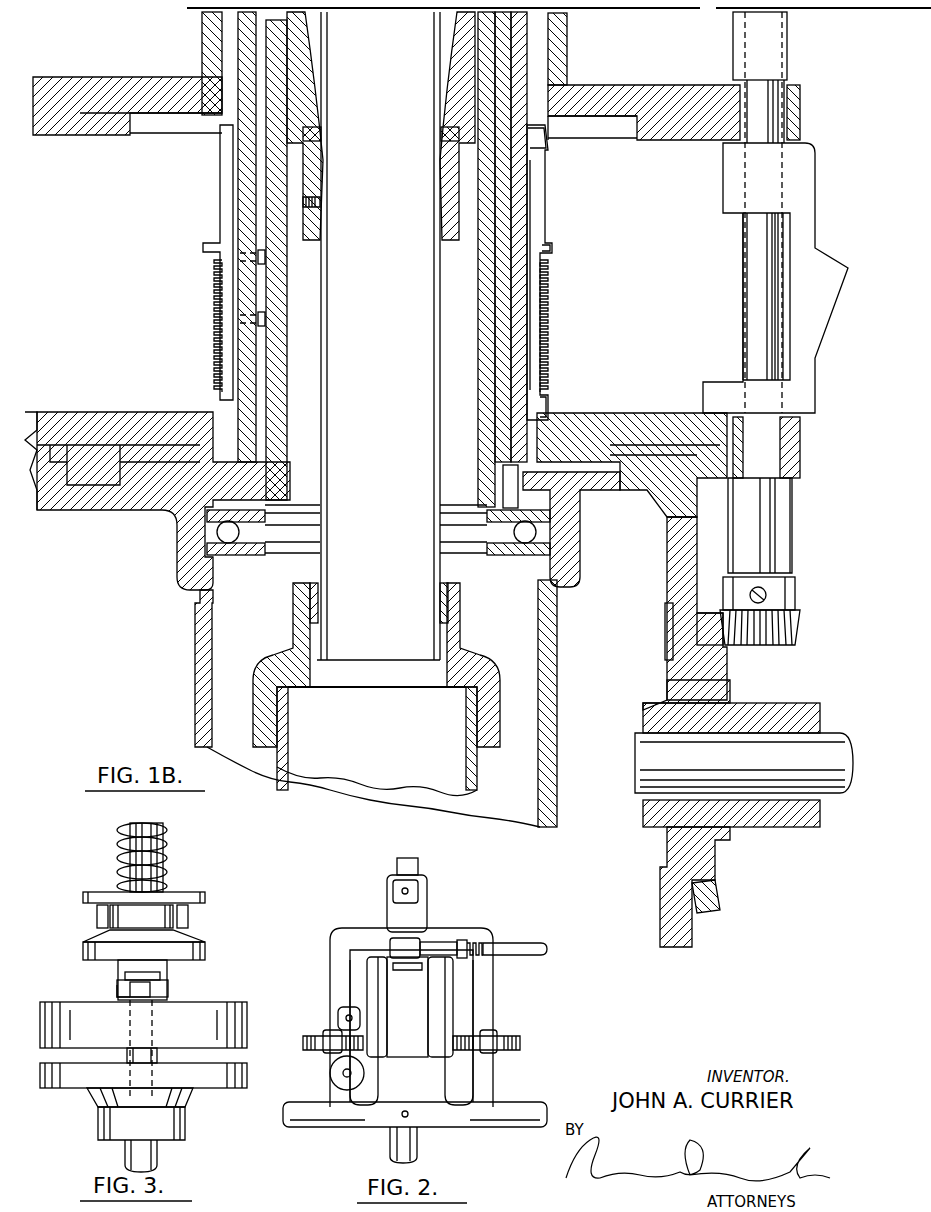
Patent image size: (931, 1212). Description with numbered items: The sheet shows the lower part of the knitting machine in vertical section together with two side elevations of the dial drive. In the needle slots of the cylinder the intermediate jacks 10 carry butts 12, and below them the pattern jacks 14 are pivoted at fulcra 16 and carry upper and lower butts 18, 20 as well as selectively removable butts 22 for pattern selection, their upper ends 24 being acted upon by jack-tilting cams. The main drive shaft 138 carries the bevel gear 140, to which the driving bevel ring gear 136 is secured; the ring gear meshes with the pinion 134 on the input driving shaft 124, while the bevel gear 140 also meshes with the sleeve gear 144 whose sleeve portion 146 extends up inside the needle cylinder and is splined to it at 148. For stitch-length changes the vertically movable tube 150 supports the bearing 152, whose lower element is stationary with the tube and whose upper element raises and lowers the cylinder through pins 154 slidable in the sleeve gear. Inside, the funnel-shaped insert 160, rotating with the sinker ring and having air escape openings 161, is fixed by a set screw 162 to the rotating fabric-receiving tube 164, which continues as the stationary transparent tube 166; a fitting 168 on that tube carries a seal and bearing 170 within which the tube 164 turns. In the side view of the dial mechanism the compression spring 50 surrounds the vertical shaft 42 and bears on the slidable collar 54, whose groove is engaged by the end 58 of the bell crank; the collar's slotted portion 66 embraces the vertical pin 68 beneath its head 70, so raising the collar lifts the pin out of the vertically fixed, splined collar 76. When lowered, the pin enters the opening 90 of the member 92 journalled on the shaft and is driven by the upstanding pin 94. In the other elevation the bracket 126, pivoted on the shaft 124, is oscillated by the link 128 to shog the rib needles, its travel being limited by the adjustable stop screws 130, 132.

In FIG. 1B, the intermediate jacks 10 is at (548, 58).
In FIG. 1B, the butts 12 is at (558, 115).
In FIG. 1B, the pattern jacks 14 is at (540, 228).
In FIG. 1B, the fulcra 16 is at (527, 210).
In FIG. 1B, the upper butt 18 is at (552, 248).
In FIG. 1B, the lower butt 20 is at (548, 405).
In FIG. 1B, the selectively removable butts 22 is at (548, 310).
In FIG. 1B, the upper ends of the pattern jacks 24 is at (545, 160).
In FIG. 1B, the shaft 124 is at (775, 120).
In FIG. 2, the shaft 124 is at (420, 1150).
In FIG. 1B, the pinion 134 is at (796, 625).
In FIG. 1B, the bevel ring gear 136 is at (717, 898).
In FIG. 1B, the main drive shaft 138 is at (830, 745).
In FIG. 1B, the bevel gear 140 is at (672, 540).
In FIG. 1B, the sleeve gear 144 is at (670, 418).
In FIG. 1B, the sleeve portion 146 is at (482, 432).
In FIG. 1B, the spline 148 is at (262, 298).
In FIG. 1B, the vertically movable tube 150 is at (553, 700).
In FIG. 1B, the bearing 152 is at (515, 556).
In FIG. 1B, the pins 154 is at (508, 478).
In FIG. 1B, the funnel-shaped insert 160 is at (300, 80).
In FIG. 1B, the air escape openings 161 is at (452, 135).
In FIG. 1B, the set screw 162 is at (318, 200).
In FIG. 1B, the fabric-receiving tube 164 is at (328, 42).
In FIG. 1B, the stationary tube 166 is at (478, 782).
In FIG. 1B, the fitting 168 is at (462, 652).
In FIG. 1B, the seal and bearing 170 is at (450, 617).
In FIG. 3, the vertical shaft 42 is at (160, 855).
In FIG. 3, the compression spring 50 is at (125, 835).
In FIG. 3, the collar 54 is at (105, 893).
In FIG. 3, the end of bell crank 58 is at (97, 915).
In FIG. 3, the slot 66 is at (170, 989).
In FIG. 3, the vertical pin 68 is at (118, 985).
In FIG. 3, the head 70 is at (170, 972).
In FIG. 3, the collar 76 is at (60, 1003).
In FIG. 3, the opening 90 is at (150, 1077).
In FIG. 3, the member 92 is at (190, 1108).
In FIG. 3, the upstanding pin 94 is at (125, 1062).
In FIG. 2, the bracket 126 is at (452, 938).
In FIG. 2, the link 128 is at (507, 943).
In FIG. 2, the adjustable stop screw 130 is at (305, 1036).
In FIG. 2, the adjustable stop screw 132 is at (505, 1036).